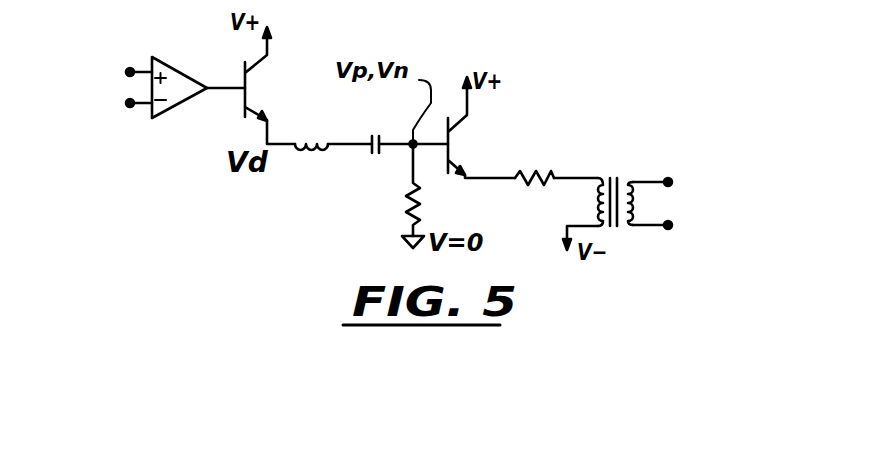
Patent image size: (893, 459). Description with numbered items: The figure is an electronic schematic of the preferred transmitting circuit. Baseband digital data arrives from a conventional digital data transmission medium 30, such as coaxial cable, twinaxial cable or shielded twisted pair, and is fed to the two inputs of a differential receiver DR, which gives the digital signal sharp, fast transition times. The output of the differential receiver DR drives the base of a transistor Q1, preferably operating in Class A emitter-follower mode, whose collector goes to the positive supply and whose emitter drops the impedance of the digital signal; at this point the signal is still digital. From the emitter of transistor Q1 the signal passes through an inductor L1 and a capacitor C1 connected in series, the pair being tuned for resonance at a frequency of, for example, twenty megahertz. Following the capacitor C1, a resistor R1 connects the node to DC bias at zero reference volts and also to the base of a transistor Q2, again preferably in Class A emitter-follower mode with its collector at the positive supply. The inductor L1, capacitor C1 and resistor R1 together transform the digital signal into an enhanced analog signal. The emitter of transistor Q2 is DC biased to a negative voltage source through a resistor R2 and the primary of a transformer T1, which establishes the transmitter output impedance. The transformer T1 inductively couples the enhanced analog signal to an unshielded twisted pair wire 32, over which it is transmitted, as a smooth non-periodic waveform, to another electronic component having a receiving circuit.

The digital data transmission medium 30 is at (70, 61).
The unshielded twisted pair wire 32 is at (643, 163).
The differential receiver DR is at (179, 100).
The transistor Q1 is at (270, 85).
The transistor Q2 is at (481, 127).
The inductor L1 is at (311, 132).
The capacitor C1 is at (376, 130).
The resistor R1 is at (391, 190).
The resistor R2 is at (534, 166).
The transformer T1 is at (615, 188).